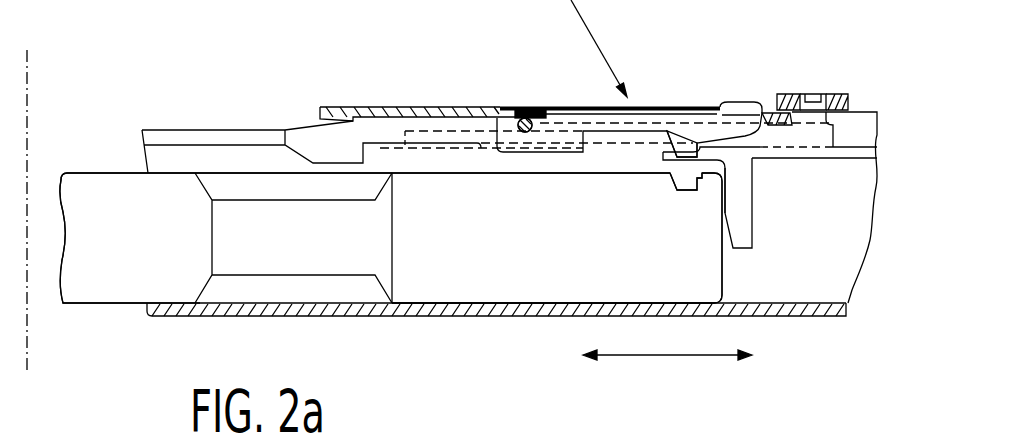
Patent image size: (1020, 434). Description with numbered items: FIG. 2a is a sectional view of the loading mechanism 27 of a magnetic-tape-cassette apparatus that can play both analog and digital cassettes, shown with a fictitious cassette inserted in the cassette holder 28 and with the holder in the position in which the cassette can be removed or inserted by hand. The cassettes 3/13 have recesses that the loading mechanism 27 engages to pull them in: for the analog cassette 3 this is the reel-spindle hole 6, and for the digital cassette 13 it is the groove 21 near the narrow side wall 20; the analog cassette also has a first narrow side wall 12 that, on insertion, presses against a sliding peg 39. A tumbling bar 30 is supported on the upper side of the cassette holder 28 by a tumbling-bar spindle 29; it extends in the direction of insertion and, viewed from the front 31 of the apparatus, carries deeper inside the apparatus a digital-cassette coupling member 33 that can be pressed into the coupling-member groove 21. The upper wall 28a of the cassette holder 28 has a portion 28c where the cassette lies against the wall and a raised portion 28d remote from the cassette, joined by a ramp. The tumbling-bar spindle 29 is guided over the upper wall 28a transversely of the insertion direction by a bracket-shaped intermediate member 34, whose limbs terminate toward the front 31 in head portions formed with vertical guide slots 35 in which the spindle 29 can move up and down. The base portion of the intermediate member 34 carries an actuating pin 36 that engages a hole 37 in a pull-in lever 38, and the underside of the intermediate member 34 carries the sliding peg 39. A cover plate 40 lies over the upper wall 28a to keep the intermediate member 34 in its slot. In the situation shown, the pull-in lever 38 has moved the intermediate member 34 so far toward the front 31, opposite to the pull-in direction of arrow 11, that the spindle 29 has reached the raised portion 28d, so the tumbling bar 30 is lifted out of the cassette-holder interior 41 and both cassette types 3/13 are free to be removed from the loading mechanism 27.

The front 31 is at (27, 82).
The analog magnetic-tape cassette 3 is at (92, 293).
The digital magnetic-tape cassette 13 is at (226, 238).
The reel-spindle hole 6 is at (368, 183).
The first narrow side wall 12 is at (723, 270).
The narrow side wall 20 is at (557, 238).
The groove 21 is at (692, 189).
The cassette holder 28 is at (543, 305).
The upper wall 28a is at (552, 149).
The portion 28c is at (588, 147).
The raised portion 28d is at (481, 140).
The tumbling-bar spindle 29 is at (524, 112).
The tumbling bar 30 is at (694, 107).
The digital-cassette coupling member 33 is at (683, 133).
The intermediate member 34 is at (786, 151).
The guide slots 35 is at (527, 133).
The actuating pin 36 is at (818, 95).
The hole 37 is at (801, 95).
The pull-in lever 38 is at (845, 97).
The sliding peg 39 is at (740, 221).
The cover plate 40 is at (398, 107).
The cassette-holder interior 41 is at (788, 292).
The loading mechanism 27 is at (667, 388).
The arrow 11 is at (812, 407).